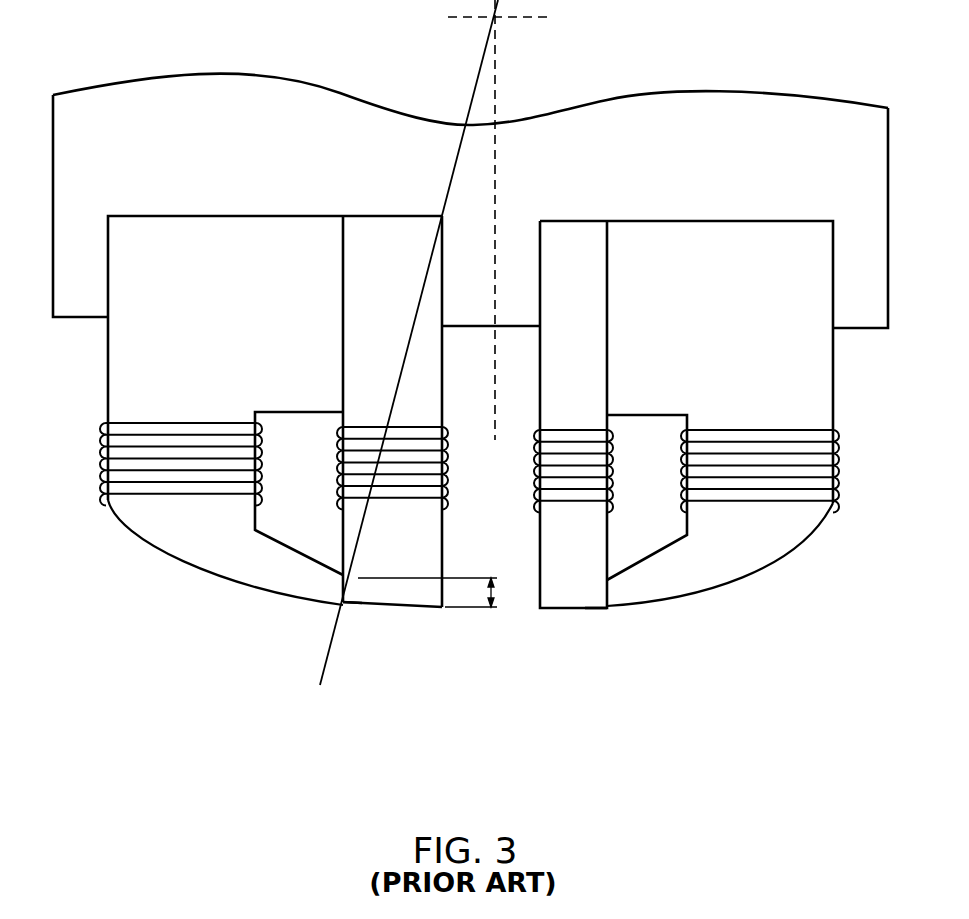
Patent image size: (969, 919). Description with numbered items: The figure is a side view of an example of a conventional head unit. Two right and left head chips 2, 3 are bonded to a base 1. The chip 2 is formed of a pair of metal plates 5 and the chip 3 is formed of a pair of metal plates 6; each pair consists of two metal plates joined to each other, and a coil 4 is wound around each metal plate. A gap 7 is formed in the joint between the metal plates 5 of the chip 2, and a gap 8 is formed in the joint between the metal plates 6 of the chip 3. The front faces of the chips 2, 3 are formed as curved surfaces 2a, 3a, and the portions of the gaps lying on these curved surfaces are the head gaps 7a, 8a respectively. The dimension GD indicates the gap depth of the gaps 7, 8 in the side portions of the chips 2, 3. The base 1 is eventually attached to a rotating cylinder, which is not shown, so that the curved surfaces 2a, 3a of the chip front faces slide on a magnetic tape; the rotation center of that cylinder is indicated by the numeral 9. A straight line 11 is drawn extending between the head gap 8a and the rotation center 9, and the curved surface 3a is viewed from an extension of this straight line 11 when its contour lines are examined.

The base 1 is at (75, 318).
The head chip 2 is at (818, 383).
The curved surface 2a is at (730, 585).
The head chip 3 is at (112, 387).
The curved surface 3a is at (155, 548).
The coil 4 is at (100, 505).
The metal plates 5 is at (573, 225).
The metal plates 6 is at (264, 222).
The gap 7 is at (607, 585).
The head gap 7a is at (600, 607).
The gap 8 is at (343, 588).
The head gap 8a is at (338, 605).
The rotation center 9 is at (495, 17).
The straight line 11 is at (472, 102).
The gap depth dimension GD is at (431, 579).